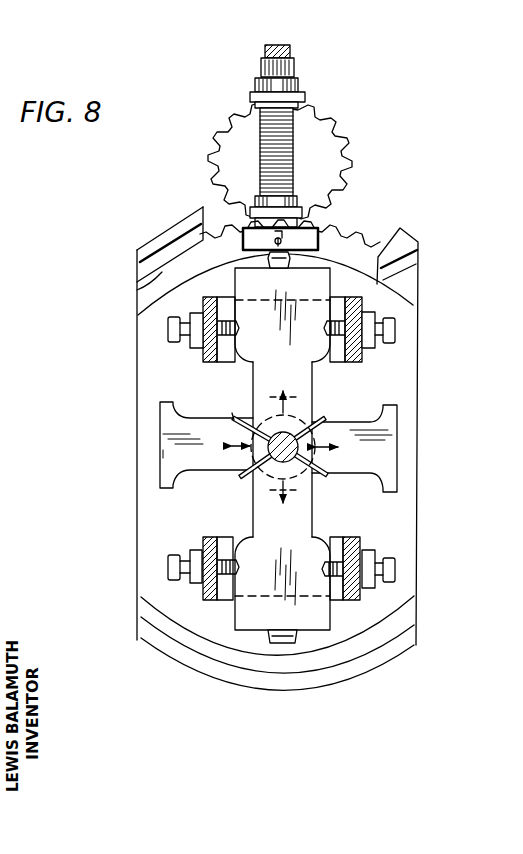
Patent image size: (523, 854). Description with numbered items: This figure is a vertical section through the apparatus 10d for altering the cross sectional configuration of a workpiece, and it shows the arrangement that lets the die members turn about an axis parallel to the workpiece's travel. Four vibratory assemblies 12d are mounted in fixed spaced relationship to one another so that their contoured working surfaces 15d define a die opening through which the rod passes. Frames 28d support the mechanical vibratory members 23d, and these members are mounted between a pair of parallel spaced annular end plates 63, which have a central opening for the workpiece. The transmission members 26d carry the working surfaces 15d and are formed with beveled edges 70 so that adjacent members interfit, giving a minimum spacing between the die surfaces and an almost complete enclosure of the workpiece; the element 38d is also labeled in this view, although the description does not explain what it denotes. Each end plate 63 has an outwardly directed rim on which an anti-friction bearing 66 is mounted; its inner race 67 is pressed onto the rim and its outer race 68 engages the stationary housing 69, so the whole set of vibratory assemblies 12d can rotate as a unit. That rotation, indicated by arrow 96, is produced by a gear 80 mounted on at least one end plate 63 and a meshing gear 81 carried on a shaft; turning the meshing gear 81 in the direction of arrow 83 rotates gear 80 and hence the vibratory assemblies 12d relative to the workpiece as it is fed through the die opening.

The apparatus 10d is at (128, 326).
The vibratory assemblies 12d is at (258, 131).
The contoured working surfaces 15d is at (258, 466).
The mechanical vibratory members 23d is at (334, 289).
The transmission members 26d is at (313, 385).
The frames 28d is at (362, 362).
The junction web 38d is at (238, 402).
The annular end plates 63 is at (140, 507).
The anti-friction bearing 66 is at (160, 257).
The inner race 67 is at (155, 287).
The outer race 68 is at (188, 237).
The stationary housing 69 is at (415, 237).
The beveled edges 70 is at (318, 426).
The gear 80 is at (339, 237).
The meshing gear 81 is at (323, 140).
The arrow 83 is at (246, 183).
The arrow 96 is at (421, 217).